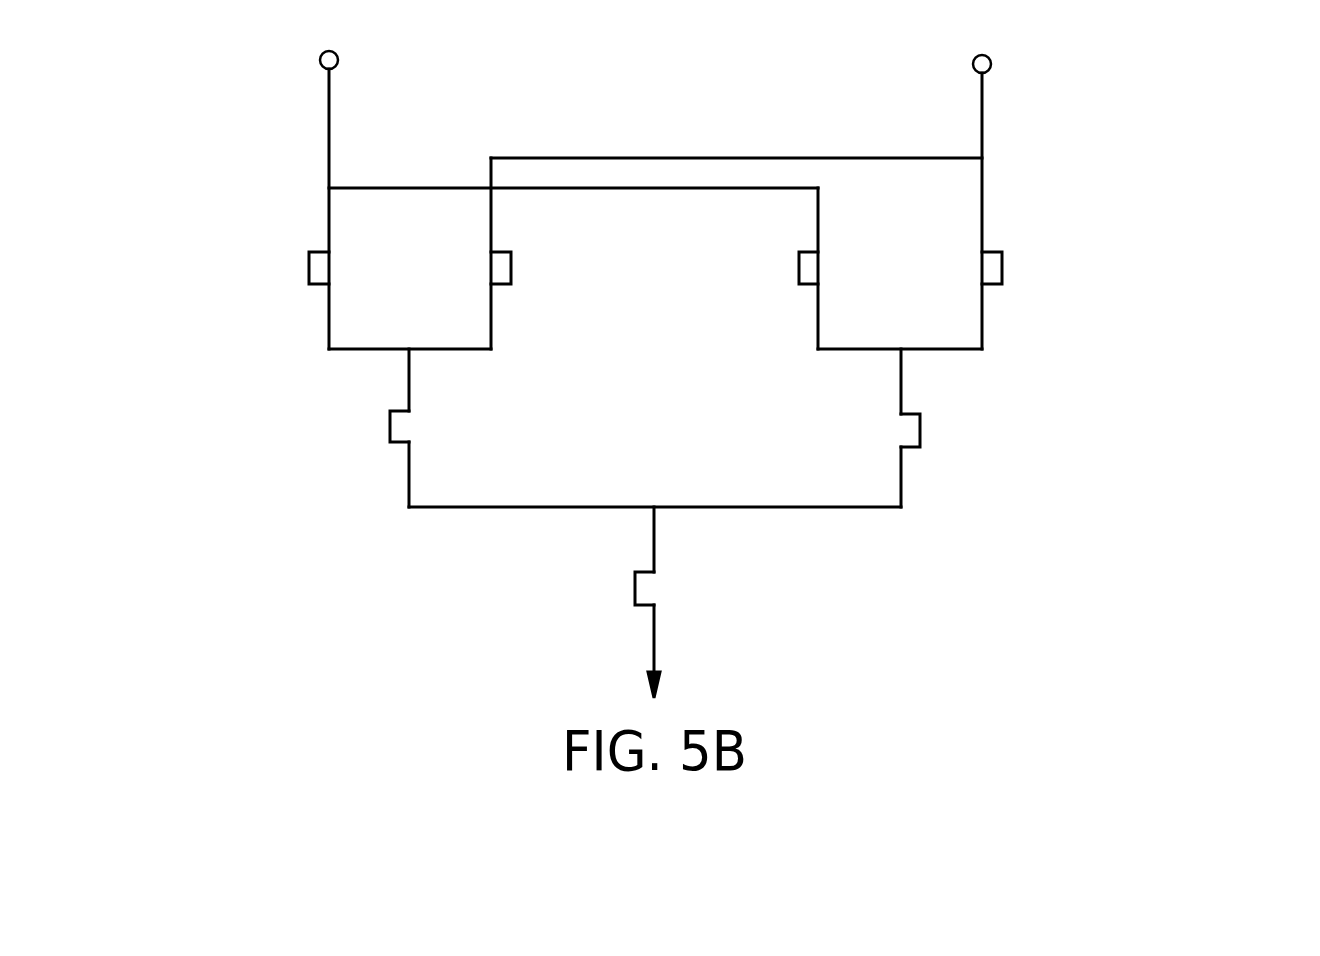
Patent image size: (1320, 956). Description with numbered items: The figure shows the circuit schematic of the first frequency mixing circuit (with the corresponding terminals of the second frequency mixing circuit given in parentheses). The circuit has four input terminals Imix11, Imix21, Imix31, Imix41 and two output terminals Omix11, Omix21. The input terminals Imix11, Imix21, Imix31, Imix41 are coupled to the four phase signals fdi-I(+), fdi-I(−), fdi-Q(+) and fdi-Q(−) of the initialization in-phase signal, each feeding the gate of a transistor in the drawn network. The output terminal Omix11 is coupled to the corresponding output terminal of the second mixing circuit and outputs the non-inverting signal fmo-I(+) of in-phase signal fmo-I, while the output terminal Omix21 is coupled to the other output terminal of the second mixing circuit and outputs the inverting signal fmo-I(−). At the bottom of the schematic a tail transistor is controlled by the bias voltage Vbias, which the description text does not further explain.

The output terminal Omix11 is at (336, 25).
The output terminal Omix21 is at (990, 30).
The input terminal Imix11 is at (302, 251).
The input terminal Imix21 is at (792, 285).
The input terminal Imix31 is at (383, 410).
The input terminal Imix41 is at (927, 413).
The bias voltage Vbias transistor gate Vbias is at (628, 571).